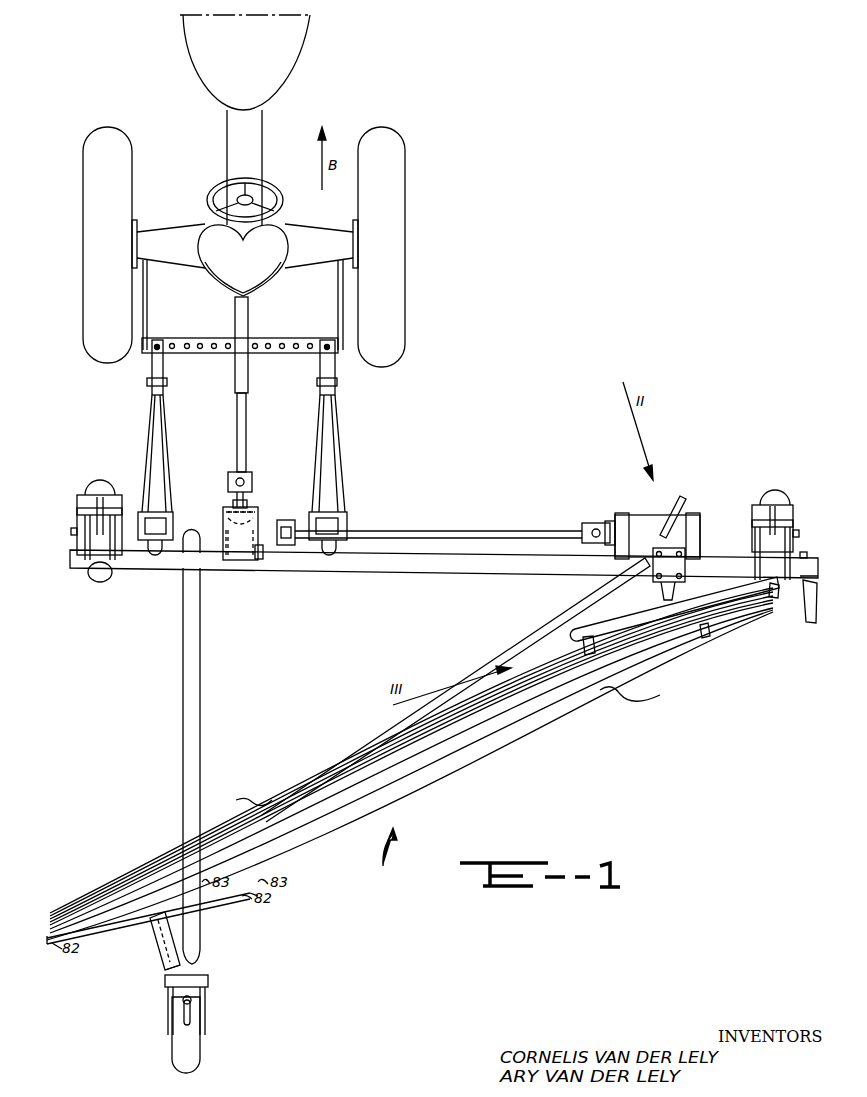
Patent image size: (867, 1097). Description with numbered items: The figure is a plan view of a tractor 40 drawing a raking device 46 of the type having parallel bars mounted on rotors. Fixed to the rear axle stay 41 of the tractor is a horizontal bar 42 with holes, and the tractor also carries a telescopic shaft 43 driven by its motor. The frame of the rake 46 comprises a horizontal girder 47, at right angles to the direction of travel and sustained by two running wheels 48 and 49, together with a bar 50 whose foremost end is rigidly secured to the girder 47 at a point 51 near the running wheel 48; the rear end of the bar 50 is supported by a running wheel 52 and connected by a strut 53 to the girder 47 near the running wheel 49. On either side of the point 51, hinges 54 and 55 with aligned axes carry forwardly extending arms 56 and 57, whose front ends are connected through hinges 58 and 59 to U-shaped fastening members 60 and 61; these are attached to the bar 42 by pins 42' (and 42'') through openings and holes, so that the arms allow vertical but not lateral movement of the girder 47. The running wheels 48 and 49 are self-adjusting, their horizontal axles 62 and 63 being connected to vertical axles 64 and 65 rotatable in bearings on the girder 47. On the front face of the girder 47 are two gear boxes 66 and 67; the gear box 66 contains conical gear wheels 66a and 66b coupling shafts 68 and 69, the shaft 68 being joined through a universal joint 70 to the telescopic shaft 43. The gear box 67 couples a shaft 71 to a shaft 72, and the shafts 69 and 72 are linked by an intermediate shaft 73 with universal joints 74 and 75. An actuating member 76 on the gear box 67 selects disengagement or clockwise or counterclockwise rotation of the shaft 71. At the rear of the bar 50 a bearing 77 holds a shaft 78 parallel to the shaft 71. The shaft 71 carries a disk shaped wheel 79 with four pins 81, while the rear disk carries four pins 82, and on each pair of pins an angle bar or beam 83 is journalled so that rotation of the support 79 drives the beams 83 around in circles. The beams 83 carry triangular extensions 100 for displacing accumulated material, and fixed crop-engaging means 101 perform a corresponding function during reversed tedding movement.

The tractor 40 is at (256, 191).
The rear axle stay 41 is at (259, 260).
The horizontal bar 42 is at (240, 336).
The pins 42' is at (175, 335).
The hitch bar hole 42'' is at (316, 335).
The telescopic shaft 43 is at (254, 384).
The raking device 46 is at (410, 764).
The horizontal girder 47 is at (444, 570).
The running wheel 48 is at (95, 526).
The running wheel 49 is at (780, 529).
The bar 50 is at (205, 766).
The point 51 is at (204, 559).
The running wheel 52 is at (194, 1024).
The strut 53 is at (456, 690).
The hinge 54 is at (144, 564).
The hinge 55 is at (336, 564).
The arm 56 is at (165, 467).
The arm 57 is at (338, 467).
The hinge 58 is at (169, 386).
The hinge 59 is at (340, 386).
The U-shaped fastening member 60 is at (170, 367).
The U-shaped fastening member 61 is at (340, 367).
The horizontal axle 62 is at (64, 535).
The horizontal axle 63 is at (805, 538).
The vertical axle 64 is at (106, 497).
The vertical axle 65 is at (785, 512).
The gear box 66 is at (253, 530).
The conical gear wheel 66a is at (222, 500).
The conical gear wheel 66b is at (204, 531).
The gear box 67 is at (657, 530).
The shaft 68 is at (256, 496).
The shaft 69 is at (266, 566).
The universal joint 70 is at (252, 483).
The shaft 71 is at (657, 575).
The shaft 72 is at (599, 521).
The intermediate shaft 73 is at (438, 524).
The universal joint 74 is at (293, 554).
The universal joint 75 is at (586, 526).
The actuating member 76 is at (682, 512).
The bearing 77 is at (154, 967).
The shaft 78 is at (152, 941).
The disk shaped wheel 79 is at (674, 609).
The pins 81 is at (680, 615).
The pins 82 is at (152, 918).
The angle bar 83 is at (148, 904).
The triangular extensions 100 is at (239, 799).
The fixed crop-engaging means 101 is at (632, 691).